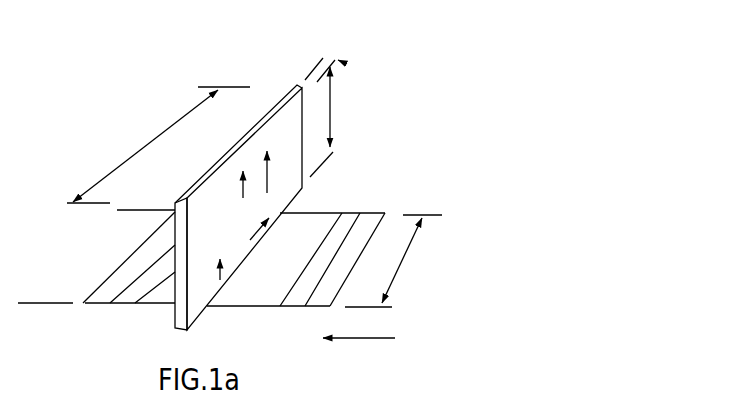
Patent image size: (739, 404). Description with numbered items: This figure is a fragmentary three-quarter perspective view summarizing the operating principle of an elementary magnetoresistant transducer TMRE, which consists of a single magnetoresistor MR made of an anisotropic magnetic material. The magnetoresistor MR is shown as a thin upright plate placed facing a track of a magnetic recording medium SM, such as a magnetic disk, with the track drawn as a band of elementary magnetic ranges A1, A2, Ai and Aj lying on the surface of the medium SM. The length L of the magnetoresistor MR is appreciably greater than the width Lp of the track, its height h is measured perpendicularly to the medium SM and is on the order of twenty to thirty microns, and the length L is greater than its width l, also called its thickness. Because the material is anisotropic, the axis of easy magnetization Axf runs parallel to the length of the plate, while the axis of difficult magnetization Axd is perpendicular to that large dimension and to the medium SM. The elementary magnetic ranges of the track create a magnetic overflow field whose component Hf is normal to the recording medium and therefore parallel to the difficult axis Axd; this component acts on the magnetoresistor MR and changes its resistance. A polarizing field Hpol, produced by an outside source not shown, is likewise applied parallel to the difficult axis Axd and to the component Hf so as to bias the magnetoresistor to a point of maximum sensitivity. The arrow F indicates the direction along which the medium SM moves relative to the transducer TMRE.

The magnetoresistor MR is at (263, 115).
The elementary magnetoresistant transducer TMRE is at (353, 111).
The magnetic recording medium SM is at (38, 307).
The elementary magnetic range A1 is at (128, 266).
The elementary magnetic range A2 is at (127, 293).
The elementary magnetic range Ai is at (320, 259).
The j-th magnetized domain Aj is at (334, 282).
The length of the magnetoresistor L is at (158, 145).
The width of the magnetoresistor l is at (319, 57).
The height of the magnetoresistor h is at (338, 107).
The width of the track Lp is at (393, 261).
The direction of medium motion F is at (359, 353).
The field of polarization Hpol is at (243, 188).
The component of the magnetic overflow field Hf is at (267, 180).
The axis of easy magnetization Axf is at (266, 232).
The axis of difficult magnetization Axd is at (222, 271).